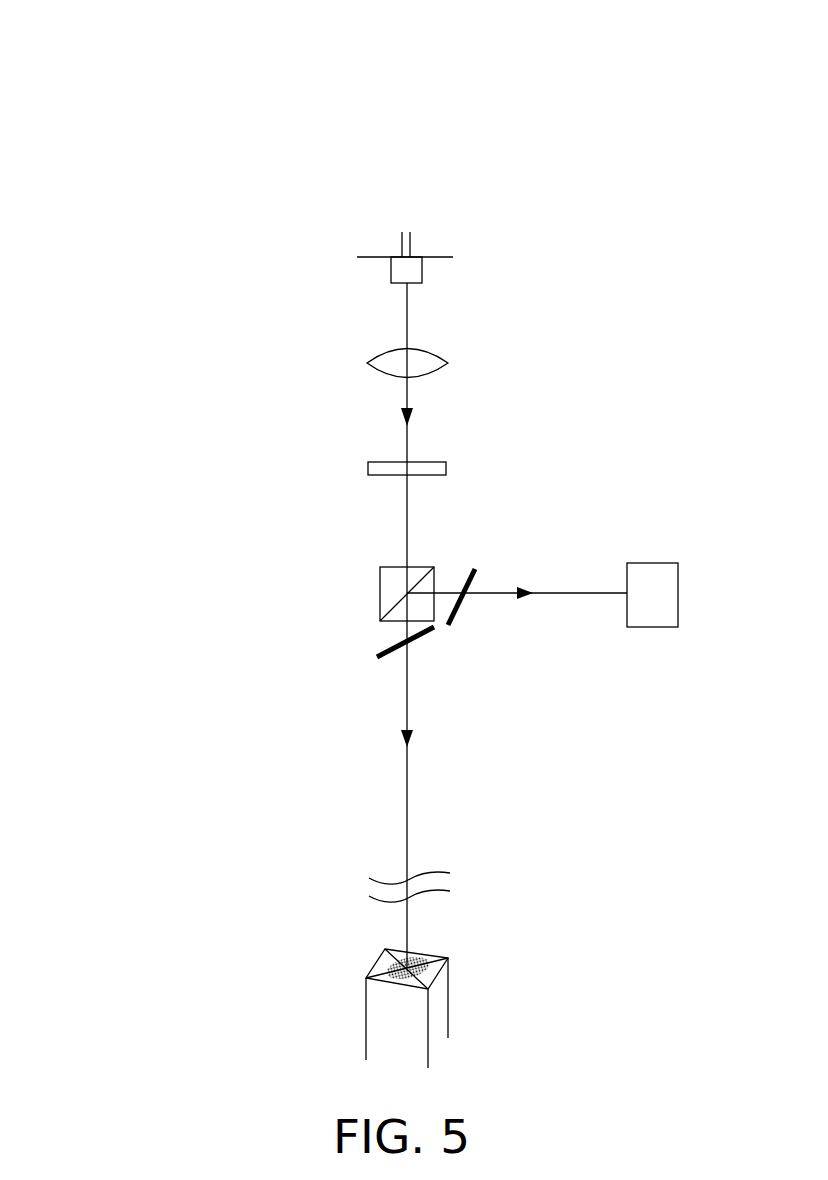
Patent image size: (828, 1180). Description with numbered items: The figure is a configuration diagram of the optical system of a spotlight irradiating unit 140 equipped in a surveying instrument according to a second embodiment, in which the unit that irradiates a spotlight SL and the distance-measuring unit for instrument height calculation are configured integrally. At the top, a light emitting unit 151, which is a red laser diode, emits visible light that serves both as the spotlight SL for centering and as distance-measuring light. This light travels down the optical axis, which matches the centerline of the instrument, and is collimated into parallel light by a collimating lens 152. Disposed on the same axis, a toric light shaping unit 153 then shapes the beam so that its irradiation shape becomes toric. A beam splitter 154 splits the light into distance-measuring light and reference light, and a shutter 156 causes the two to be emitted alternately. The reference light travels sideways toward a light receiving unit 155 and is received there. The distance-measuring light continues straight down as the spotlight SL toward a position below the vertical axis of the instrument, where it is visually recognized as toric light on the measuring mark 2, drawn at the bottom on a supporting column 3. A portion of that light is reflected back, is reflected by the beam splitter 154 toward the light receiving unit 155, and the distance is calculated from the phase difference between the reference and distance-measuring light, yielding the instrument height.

The spotlight irradiating unit 140 is at (153, 106).
The light emitting unit 151 is at (367, 260).
The collimating lens 152 is at (367, 363).
The toric light shaping unit 153 is at (368, 468).
The beam splitter 154 is at (380, 595).
The light receiving unit 155 is at (642, 627).
The shutter 156 is at (467, 612).
The measuring mark 2 is at (385, 960).
The sample holder 3 is at (385, 1013).
The spotlight SL is at (435, 955).